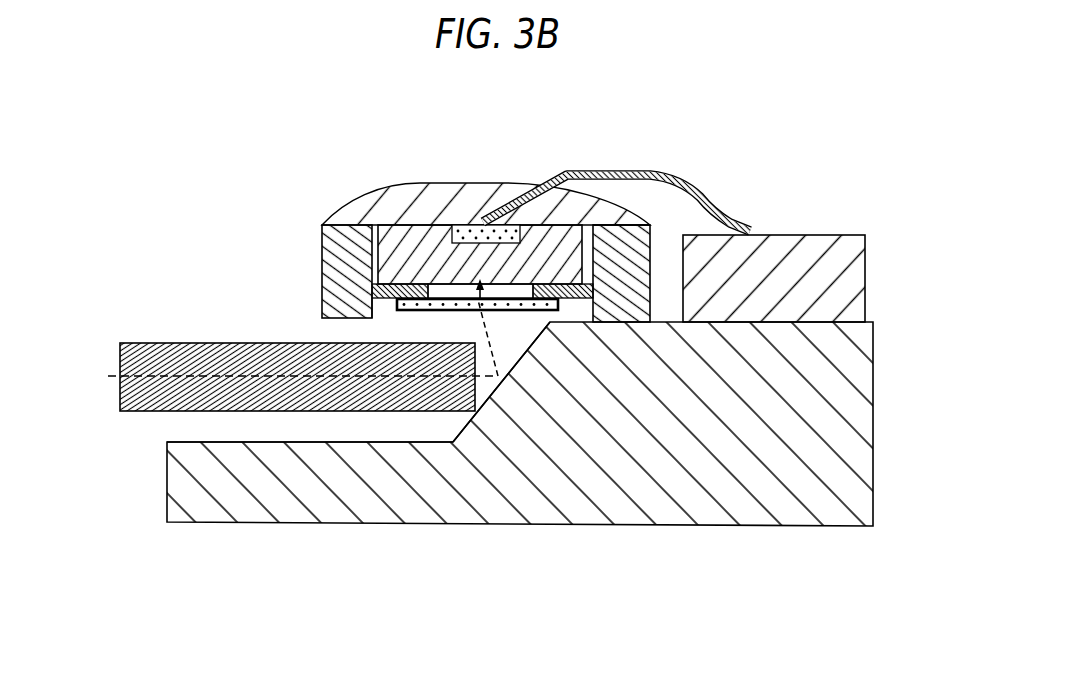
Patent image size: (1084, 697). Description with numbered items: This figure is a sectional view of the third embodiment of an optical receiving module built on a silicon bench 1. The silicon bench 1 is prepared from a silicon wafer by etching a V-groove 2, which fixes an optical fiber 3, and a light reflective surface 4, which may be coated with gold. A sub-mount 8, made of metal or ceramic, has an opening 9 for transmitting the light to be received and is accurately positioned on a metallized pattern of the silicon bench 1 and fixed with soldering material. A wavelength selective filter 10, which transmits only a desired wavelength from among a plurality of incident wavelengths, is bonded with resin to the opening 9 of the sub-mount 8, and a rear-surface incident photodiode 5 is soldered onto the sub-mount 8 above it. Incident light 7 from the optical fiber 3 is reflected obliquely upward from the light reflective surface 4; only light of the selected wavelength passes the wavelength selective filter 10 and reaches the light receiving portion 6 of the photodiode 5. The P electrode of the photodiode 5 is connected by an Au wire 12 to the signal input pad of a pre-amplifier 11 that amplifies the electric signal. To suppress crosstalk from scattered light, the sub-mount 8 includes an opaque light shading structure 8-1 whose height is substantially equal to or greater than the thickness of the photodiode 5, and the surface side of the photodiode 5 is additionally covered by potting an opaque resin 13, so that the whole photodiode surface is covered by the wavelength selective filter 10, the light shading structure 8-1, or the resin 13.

The silicon bench 1 is at (710, 502).
The V-groove 2 is at (327, 433).
The optical fiber 3 is at (205, 343).
The light reflective surface 4 is at (472, 423).
The photodiode 5 is at (392, 222).
The light receiving portion 6 is at (458, 297).
The incident light 7 is at (272, 363).
The sub-mount 8 is at (656, 245).
The light shading structure 8-1 is at (625, 228).
The opening 9 is at (505, 282).
The wavelength selective filter 10 is at (481, 240).
The pre-amplifier 11 is at (793, 250).
The Au wire 12 is at (697, 190).
The resin 13 is at (512, 186).